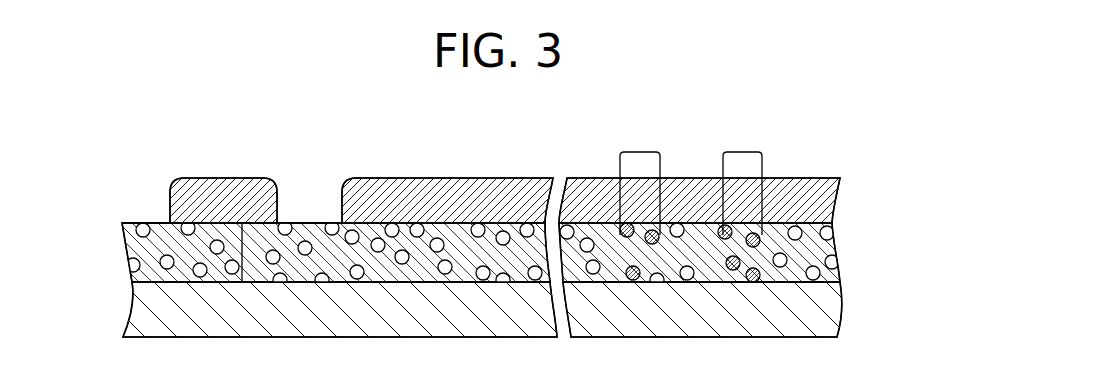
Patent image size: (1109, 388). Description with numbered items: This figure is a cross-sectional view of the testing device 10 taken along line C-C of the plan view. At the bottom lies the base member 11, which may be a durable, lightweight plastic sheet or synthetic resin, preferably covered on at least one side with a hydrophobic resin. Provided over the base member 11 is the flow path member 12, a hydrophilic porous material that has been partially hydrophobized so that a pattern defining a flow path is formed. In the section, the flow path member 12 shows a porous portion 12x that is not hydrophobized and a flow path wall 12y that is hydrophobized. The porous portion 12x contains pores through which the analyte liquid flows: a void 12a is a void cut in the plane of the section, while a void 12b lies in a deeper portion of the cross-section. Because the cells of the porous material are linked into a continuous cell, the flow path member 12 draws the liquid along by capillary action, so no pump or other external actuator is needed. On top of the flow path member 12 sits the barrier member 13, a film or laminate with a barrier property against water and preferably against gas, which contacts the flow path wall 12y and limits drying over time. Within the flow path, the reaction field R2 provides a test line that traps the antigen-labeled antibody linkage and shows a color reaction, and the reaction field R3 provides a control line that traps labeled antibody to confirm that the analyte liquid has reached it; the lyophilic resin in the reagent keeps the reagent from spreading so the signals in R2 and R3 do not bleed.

The testing device 10 is at (836, 122).
The base member 11 is at (841, 311).
The flow path member 12 is at (471, 205).
The void 12a is at (288, 222).
The void 12b is at (313, 222).
The porous portion 12x is at (337, 222).
The flow path wall 12y is at (137, 222).
The barrier member 13 is at (218, 177).
The reaction field R2 is at (640, 152).
The reaction field R3 is at (741, 152).